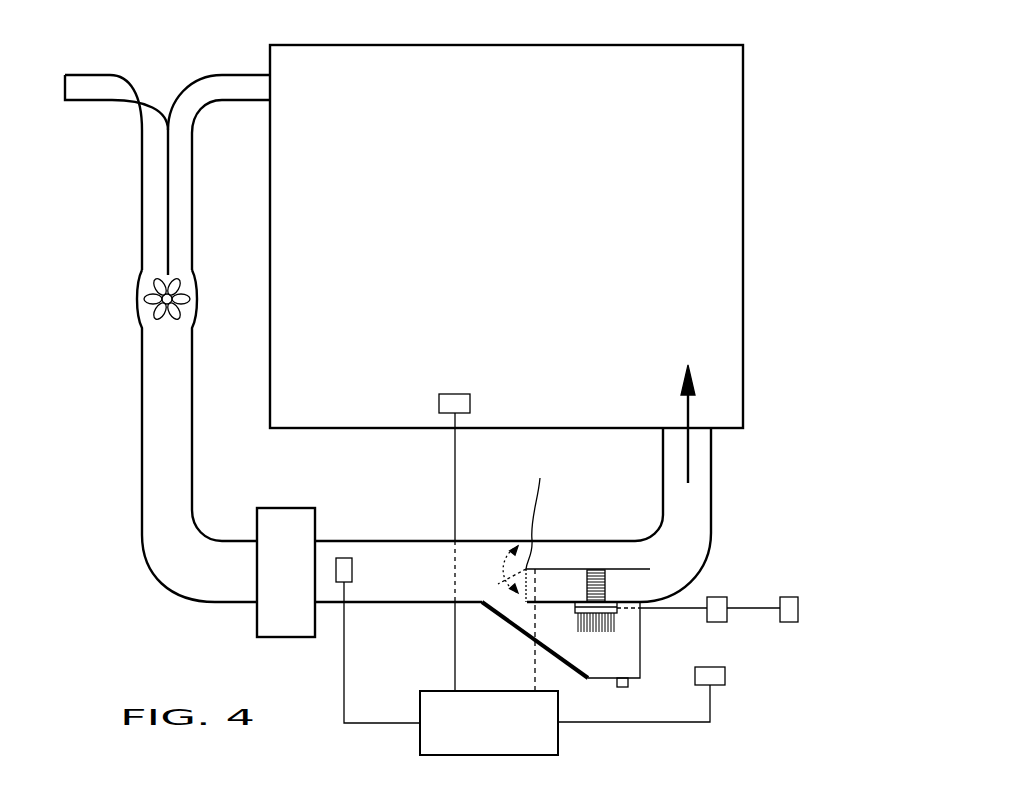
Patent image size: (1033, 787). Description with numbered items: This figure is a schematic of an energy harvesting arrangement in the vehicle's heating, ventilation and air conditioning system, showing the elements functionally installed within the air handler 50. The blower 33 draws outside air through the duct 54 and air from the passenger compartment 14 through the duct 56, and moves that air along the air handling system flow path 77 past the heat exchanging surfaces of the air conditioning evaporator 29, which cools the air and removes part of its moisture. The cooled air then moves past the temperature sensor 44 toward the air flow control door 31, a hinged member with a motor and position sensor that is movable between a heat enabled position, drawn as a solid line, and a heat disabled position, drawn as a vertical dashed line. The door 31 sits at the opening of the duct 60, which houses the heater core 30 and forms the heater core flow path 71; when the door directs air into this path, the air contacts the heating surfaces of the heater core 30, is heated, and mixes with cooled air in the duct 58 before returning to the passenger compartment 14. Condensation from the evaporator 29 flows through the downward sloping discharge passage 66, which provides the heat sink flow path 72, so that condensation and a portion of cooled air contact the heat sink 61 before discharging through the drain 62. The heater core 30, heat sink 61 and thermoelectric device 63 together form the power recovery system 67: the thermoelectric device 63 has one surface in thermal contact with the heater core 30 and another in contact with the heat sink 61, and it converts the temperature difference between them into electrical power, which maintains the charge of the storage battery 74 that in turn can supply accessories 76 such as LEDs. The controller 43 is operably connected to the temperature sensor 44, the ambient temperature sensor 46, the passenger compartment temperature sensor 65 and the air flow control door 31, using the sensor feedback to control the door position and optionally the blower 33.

The passenger compartment 14 is at (677, 42).
The duct 54 is at (93, 75).
The duct 56 is at (233, 75).
The blower 33 is at (158, 276).
The air handler 50 is at (138, 366).
The air handling system flow path 77 is at (160, 453).
The air conditioning evaporator 29 is at (270, 620).
The temperature sensor 44 is at (344, 558).
The passenger compartment temperature sensor 65 is at (455, 394).
The duct 58 is at (712, 476).
The duct 60 is at (647, 568).
The power recovery system 67 is at (660, 578).
The air flow control door 31 is at (517, 540).
The heater core flow path 71 is at (558, 572).
The heater core 30 is at (605, 578).
The heat sink 61 is at (617, 620).
The thermoelectric device 63 is at (563, 612).
The discharge passage 66 is at (557, 657).
The heat sink flow path 72 is at (542, 629).
The drain 62 is at (622, 687).
The storage battery 74 is at (717, 597).
The accessories 76 is at (790, 622).
The ambient temperature sensor 46 is at (725, 676).
The controller 43 is at (420, 738).